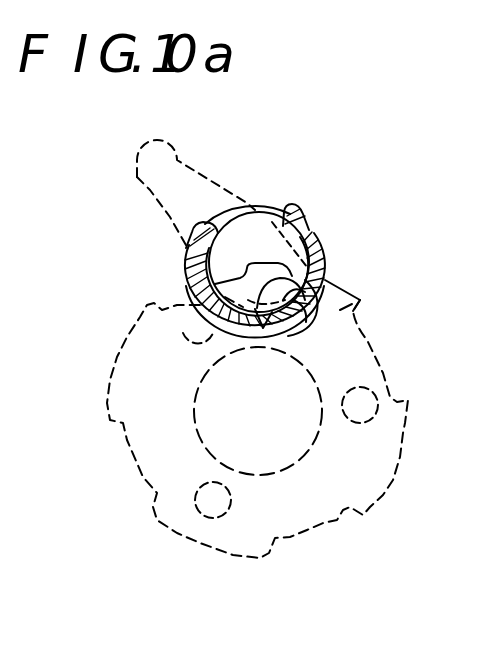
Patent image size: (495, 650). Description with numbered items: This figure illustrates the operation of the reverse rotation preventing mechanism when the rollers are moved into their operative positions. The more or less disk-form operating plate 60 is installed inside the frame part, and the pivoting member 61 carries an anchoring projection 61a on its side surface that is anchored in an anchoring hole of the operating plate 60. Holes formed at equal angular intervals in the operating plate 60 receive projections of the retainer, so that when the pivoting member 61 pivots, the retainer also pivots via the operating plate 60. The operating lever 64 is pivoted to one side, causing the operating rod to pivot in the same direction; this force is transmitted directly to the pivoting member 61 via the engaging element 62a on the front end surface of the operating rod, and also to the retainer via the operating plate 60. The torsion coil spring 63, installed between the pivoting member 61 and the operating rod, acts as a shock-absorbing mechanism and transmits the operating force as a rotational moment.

The operating plate 60 is at (375, 301).
The pivoting member 61 is at (327, 252).
The anchoring projection 61a is at (285, 262).
The engaging element 62a is at (185, 262).
The torsion coil spring 63 is at (288, 205).
The operating lever 64 is at (137, 177).